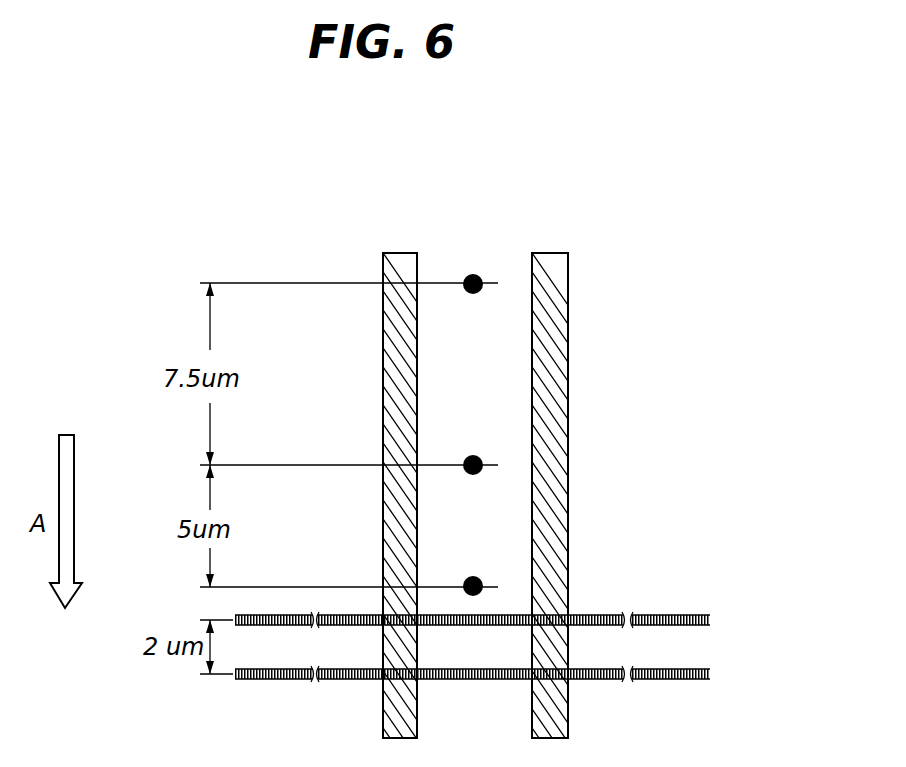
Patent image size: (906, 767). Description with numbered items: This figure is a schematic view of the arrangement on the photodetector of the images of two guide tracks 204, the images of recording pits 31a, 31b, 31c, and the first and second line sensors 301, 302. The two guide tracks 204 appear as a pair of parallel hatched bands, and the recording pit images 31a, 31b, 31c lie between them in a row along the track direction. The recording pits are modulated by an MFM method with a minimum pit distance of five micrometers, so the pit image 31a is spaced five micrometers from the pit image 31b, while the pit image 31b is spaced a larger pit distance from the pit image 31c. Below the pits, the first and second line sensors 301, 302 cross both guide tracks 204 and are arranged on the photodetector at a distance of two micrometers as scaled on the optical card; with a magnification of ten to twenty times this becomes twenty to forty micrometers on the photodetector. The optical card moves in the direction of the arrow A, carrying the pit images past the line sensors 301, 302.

The guide track 204 is at (400, 262).
The recording pit 31a is at (478, 579).
The recording pit 31b is at (478, 457).
The recording pit 31c is at (481, 290).
The first line sensor 301 is at (711, 620).
The second line sensor 302 is at (711, 674).